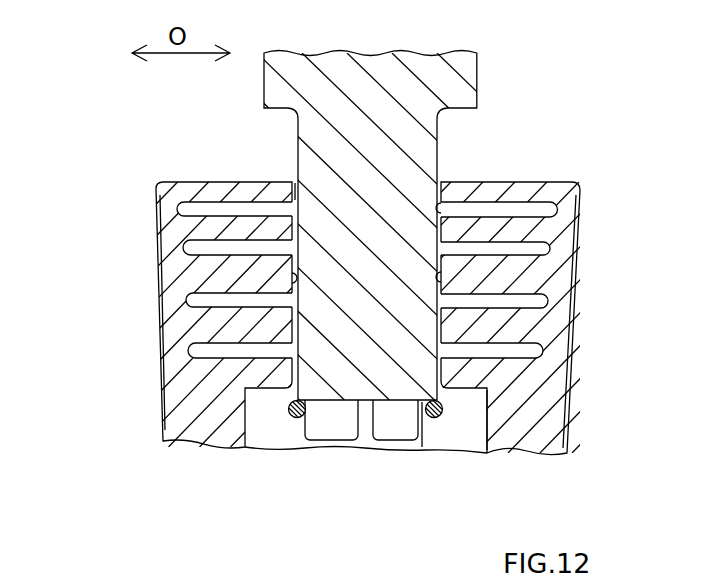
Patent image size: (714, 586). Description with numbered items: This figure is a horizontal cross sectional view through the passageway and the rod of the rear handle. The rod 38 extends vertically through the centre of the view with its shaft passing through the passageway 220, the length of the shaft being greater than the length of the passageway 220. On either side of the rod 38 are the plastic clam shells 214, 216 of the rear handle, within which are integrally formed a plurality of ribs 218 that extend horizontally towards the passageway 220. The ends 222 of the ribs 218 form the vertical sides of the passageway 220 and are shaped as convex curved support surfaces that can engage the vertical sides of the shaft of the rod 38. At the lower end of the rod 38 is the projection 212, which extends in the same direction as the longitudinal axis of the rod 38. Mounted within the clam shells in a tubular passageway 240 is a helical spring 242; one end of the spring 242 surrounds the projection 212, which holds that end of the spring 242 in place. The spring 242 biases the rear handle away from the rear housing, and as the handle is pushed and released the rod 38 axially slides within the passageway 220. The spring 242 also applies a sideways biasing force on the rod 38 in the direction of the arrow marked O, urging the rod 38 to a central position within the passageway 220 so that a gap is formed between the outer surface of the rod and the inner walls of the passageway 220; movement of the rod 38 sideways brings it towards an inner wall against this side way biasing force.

The rod 38 is at (384, 248).
The projection 212 is at (345, 425).
The plastic clam shell 214 is at (157, 185).
The plastic clam shell 216 is at (572, 192).
The ribs 218 is at (233, 266).
The passageway 220 is at (289, 185).
The ends of the ribs 222 is at (294, 225).
The tubular passageway 240 is at (473, 432).
The helical spring 242 is at (442, 448).